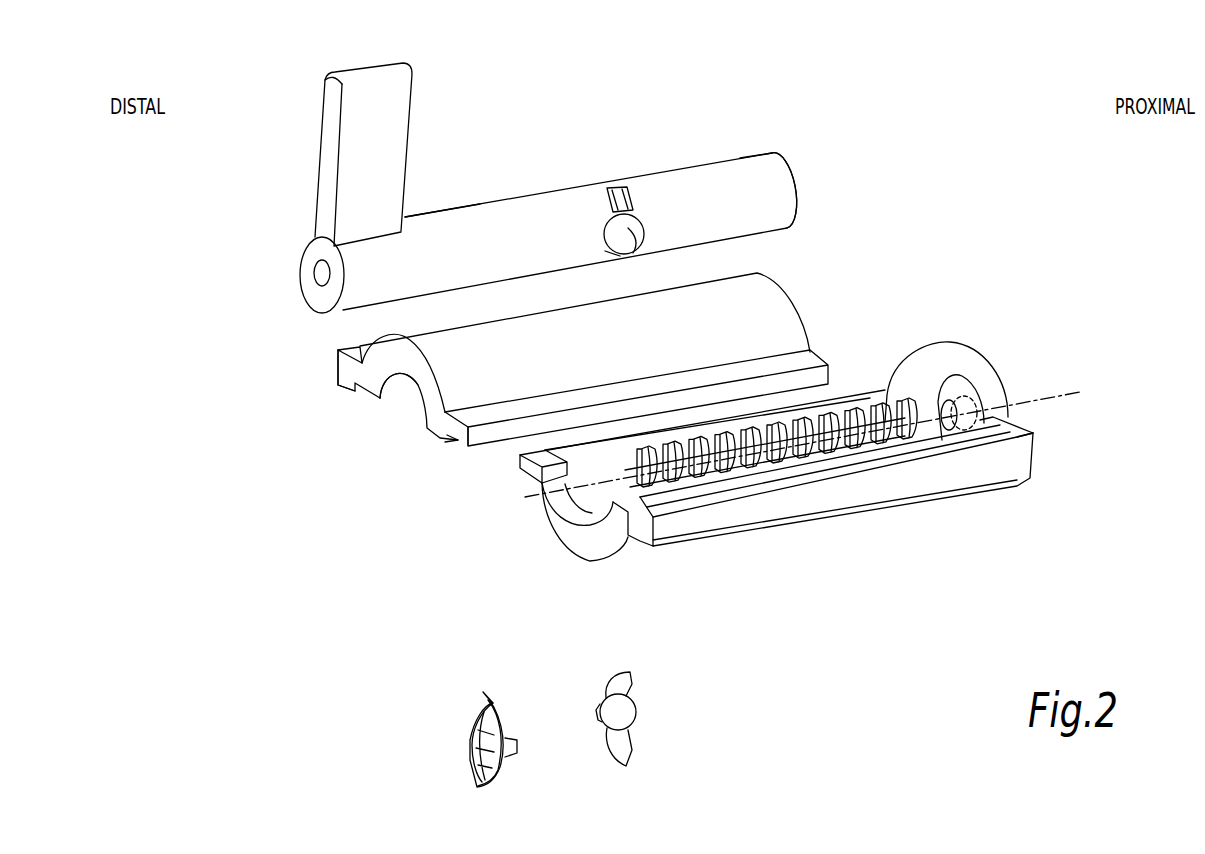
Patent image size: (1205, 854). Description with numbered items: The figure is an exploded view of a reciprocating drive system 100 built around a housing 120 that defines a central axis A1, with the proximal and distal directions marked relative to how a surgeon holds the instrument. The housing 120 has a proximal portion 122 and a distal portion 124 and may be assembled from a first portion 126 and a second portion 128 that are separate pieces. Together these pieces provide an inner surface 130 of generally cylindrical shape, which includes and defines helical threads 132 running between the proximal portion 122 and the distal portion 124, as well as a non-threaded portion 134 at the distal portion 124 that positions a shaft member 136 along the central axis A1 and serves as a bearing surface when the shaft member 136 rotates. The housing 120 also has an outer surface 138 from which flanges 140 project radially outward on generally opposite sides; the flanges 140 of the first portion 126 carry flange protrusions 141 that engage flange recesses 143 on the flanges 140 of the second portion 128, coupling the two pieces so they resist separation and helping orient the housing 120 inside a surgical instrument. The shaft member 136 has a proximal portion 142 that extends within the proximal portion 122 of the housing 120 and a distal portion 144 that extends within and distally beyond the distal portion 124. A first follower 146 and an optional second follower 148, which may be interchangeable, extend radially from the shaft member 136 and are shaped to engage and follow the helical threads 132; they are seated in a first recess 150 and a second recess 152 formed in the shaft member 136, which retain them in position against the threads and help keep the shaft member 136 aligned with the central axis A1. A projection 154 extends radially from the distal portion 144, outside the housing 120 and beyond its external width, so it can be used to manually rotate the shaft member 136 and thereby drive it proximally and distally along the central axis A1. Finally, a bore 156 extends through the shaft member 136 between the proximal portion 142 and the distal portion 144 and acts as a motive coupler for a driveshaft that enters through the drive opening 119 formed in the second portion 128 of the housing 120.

The reciprocating drive system 100 is at (908, 47).
The drive opening 119 is at (940, 400).
The housing 120 is at (280, 379).
The proximal portion 122 is at (780, 447).
The distal portion 124 is at (690, 527).
The first portion 126 is at (608, 362).
The second portion 128 is at (590, 548).
The inner surface 130 is at (734, 488).
The helical threads 132 is at (888, 428).
The non-threaded portion 134 is at (520, 469).
The shaft member 136 is at (738, 218).
The outer surface 138 is at (418, 330).
The flanges 140 is at (810, 362).
The flange protrusions 141 is at (358, 388).
The proximal portion 142 is at (797, 190).
The flange recesses 143 is at (625, 500).
The distal portion 144 is at (428, 240).
The first follower 146 is at (632, 712).
The second follower 148 is at (505, 726).
The first recess 150 is at (754, 159).
The second recess 152 is at (630, 228).
The projection 154 is at (330, 133).
The bore 156 is at (318, 272).
The central axis A1 is at (525, 497).